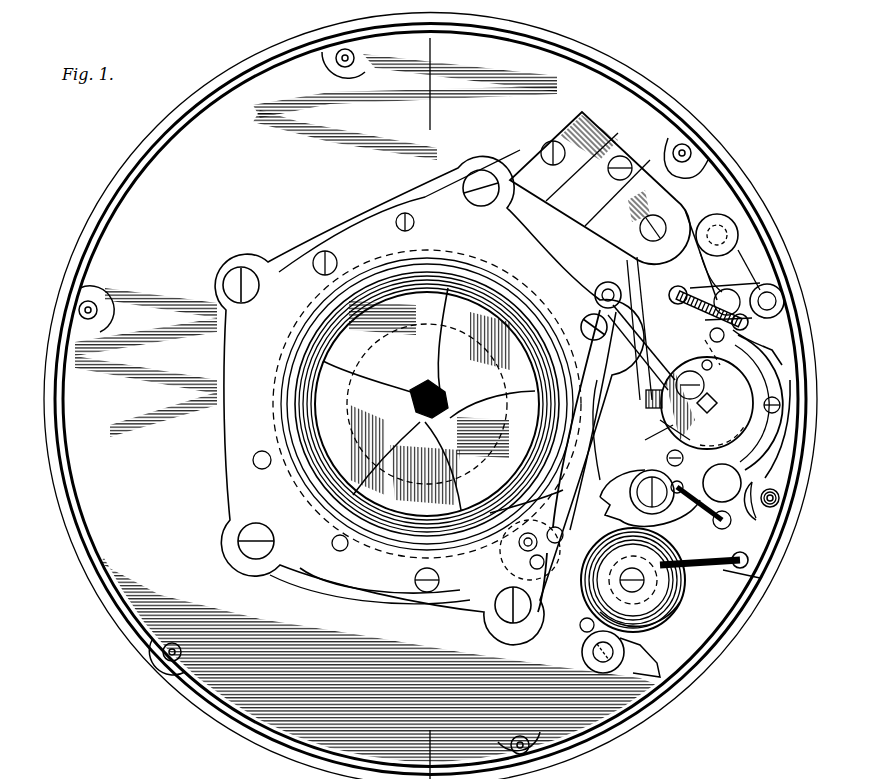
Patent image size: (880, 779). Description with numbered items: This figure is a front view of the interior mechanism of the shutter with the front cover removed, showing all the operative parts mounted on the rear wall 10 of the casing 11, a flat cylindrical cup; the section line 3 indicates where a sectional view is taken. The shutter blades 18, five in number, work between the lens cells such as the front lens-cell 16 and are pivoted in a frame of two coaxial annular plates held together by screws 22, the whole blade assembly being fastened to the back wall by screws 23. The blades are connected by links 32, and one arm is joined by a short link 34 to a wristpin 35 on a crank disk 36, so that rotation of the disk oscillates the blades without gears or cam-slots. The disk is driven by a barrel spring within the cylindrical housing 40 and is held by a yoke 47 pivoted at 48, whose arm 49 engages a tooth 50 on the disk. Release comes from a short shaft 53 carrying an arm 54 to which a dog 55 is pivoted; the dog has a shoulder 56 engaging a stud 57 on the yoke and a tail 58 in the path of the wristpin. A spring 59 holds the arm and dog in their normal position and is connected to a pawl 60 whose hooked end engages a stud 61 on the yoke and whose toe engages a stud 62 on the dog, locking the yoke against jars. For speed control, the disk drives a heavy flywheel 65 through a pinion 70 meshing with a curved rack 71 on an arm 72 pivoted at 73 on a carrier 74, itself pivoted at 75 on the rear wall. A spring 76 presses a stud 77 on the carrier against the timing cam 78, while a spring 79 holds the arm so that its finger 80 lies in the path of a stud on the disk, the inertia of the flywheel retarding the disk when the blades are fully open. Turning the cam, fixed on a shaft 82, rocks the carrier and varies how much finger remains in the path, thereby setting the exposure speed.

The section line 3 is at (470, 49).
The rear wall 10 is at (432, 405).
The casing 11 is at (292, 48).
The front lens-cell 16 is at (415, 391).
The shutter blades 18 is at (462, 411).
The screws 22 is at (481, 180).
The screws 23 is at (320, 254).
The links 32 is at (366, 252).
The short link 34 is at (611, 282).
The wristpin 35 is at (641, 395).
The crank disk 36 is at (707, 411).
The cylindrical housing 40 is at (768, 419).
The yoke 47 is at (641, 328).
The pivot 48 is at (660, 222).
The arm 49 is at (663, 420).
The tooth 50 is at (646, 436).
The short shaft 53 is at (703, 243).
The arm 54 is at (737, 245).
The dog 55 is at (784, 301).
The shoulder 56 is at (747, 330).
The stud 57 is at (713, 310).
The tail 58 is at (724, 424).
The spring 59 is at (711, 272).
The pawl 60 is at (690, 290).
The stud 61 is at (672, 298).
The stud 62 is at (748, 317).
The flywheel 65 is at (668, 618).
The pinion 70 is at (684, 592).
The curved rack 71 is at (646, 453).
The arm 72 is at (701, 517).
The pivot 73 is at (728, 466).
The carrier 74 is at (704, 571).
The pivot 75 is at (649, 482).
The spring 76 is at (750, 574).
The stud 77 is at (580, 626).
The timing cam 78 is at (582, 650).
The spring 79 is at (760, 508).
The finger 80 is at (759, 402).
The shaft 82 is at (594, 656).